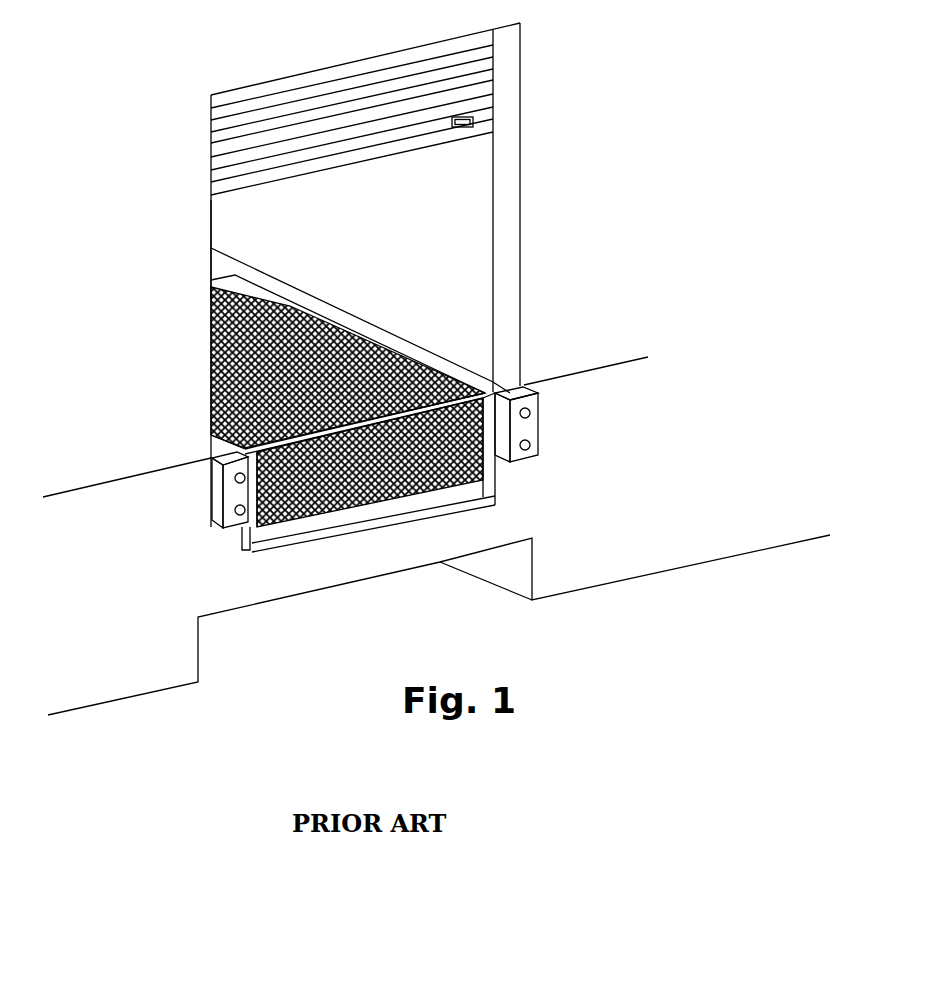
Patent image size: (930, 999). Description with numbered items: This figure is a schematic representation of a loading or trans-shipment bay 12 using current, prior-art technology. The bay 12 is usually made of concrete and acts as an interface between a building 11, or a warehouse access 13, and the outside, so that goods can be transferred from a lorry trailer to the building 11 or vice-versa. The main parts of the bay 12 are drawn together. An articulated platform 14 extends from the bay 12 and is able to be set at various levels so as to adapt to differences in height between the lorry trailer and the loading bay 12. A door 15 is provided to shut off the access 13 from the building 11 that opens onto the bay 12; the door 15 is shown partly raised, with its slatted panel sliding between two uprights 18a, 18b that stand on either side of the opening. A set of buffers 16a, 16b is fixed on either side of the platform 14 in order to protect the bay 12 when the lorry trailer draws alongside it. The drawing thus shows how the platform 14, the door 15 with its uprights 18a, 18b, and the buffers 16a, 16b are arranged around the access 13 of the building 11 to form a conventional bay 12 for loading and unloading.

The building 11 is at (311, 311).
The loading or trans-shipment bay 12 is at (447, 332).
The warehouse access 13 is at (471, 232).
The articulated platform 14 is at (212, 370).
The door 15 is at (410, 128).
The buffer 16a is at (223, 508).
The buffer 16b is at (533, 427).
The upright 18a is at (212, 213).
The upright 18b is at (508, 188).